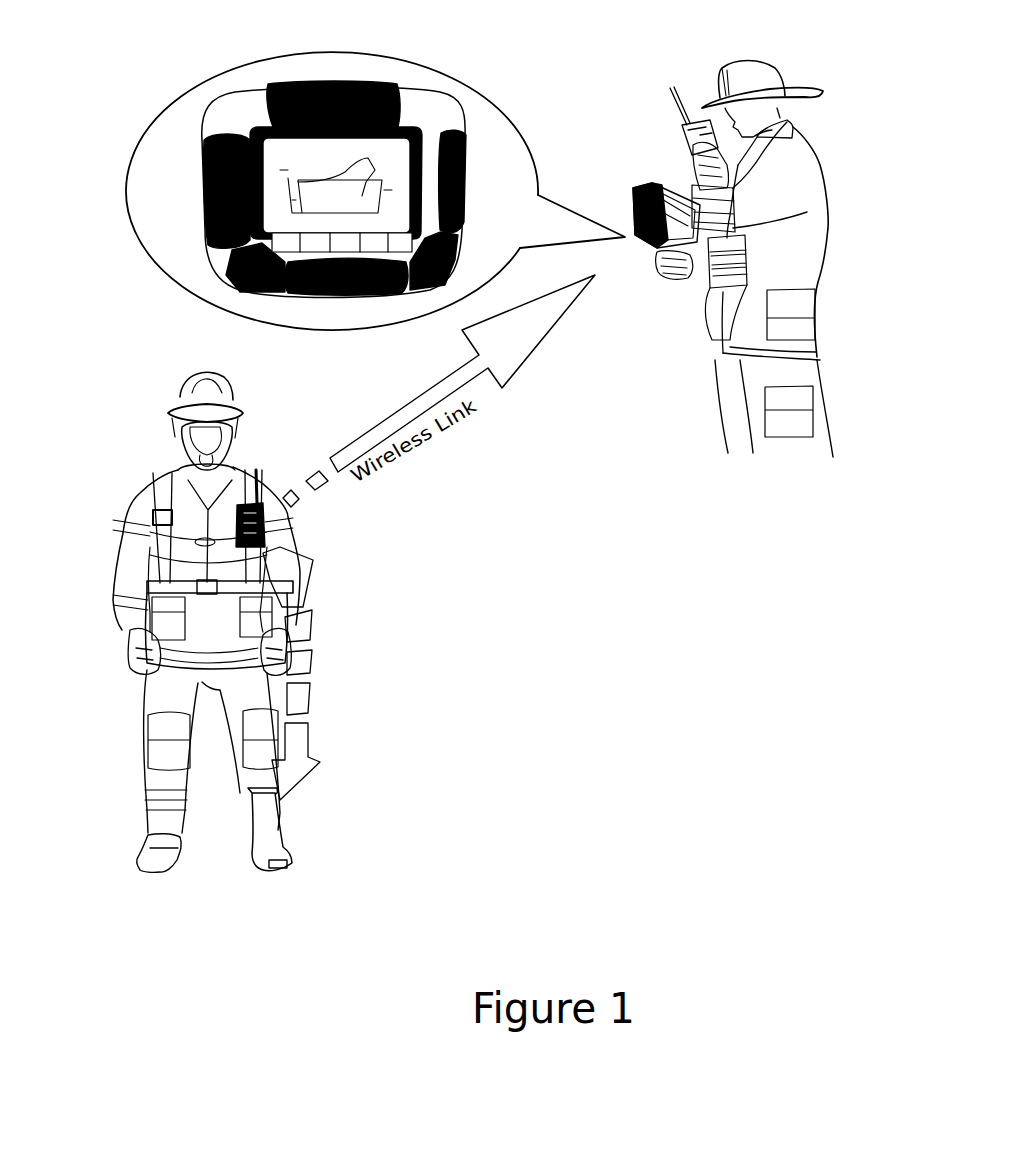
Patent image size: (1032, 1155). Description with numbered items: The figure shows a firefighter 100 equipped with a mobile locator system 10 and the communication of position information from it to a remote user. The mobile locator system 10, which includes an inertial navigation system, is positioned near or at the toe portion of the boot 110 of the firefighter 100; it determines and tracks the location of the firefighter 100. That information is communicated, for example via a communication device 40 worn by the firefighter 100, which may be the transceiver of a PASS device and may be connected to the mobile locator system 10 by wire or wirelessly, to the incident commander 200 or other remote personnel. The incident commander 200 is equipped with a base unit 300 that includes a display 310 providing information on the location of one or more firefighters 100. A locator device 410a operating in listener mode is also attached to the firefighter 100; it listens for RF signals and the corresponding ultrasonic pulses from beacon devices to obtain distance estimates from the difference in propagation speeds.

The mobile locator system 10 is at (290, 867).
The communication device 40 is at (270, 522).
The firefighter 100 is at (122, 505).
The boot 110 is at (252, 828).
The incident commander 200 is at (820, 146).
The base unit 300 is at (195, 214).
The display 310 is at (303, 172).
The locator device (listener mode) 410a is at (153, 510).